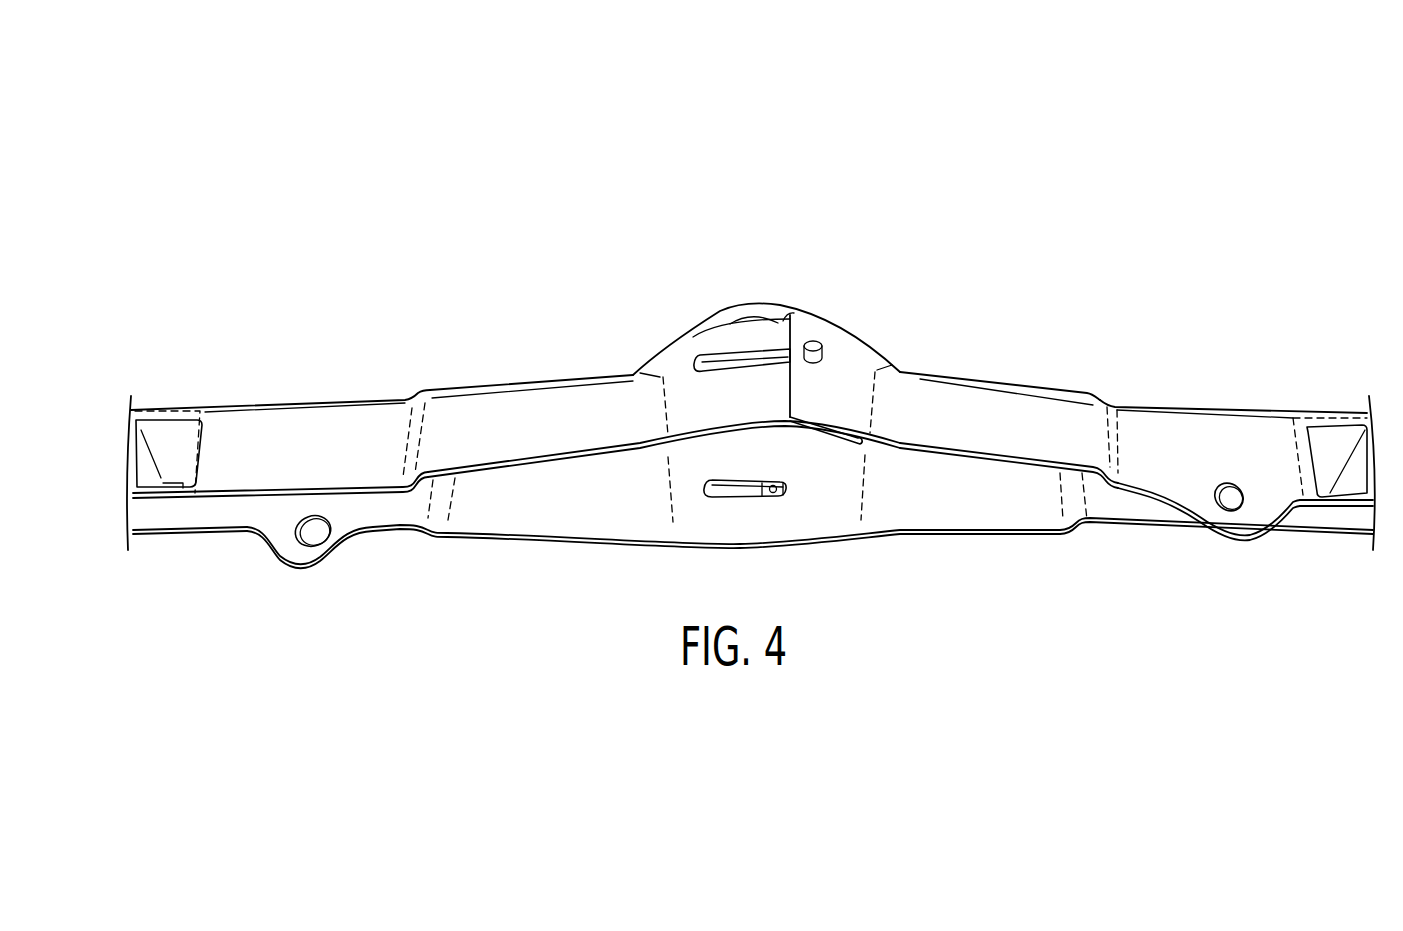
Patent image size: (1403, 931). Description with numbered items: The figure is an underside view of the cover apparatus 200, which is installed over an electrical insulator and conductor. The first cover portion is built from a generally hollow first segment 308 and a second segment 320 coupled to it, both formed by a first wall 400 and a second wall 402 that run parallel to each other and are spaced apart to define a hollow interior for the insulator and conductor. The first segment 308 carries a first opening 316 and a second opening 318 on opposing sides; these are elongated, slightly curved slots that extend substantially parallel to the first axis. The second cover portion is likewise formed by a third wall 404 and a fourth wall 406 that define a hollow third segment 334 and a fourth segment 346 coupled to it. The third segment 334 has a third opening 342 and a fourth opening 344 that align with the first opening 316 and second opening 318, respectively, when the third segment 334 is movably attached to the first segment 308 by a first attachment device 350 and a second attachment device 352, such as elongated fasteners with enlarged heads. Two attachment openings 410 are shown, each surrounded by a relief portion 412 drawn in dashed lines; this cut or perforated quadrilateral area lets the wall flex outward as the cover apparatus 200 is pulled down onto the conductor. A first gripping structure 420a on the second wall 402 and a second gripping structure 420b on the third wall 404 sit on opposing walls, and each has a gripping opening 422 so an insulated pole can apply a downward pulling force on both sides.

The cover apparatus 200 is at (636, 113).
The first segment 308 is at (493, 385).
The first opening 316 is at (701, 352).
The second opening 318 is at (754, 535).
The second segment 320 is at (318, 402).
The third segment 334 is at (992, 382).
The third opening 342 is at (805, 350).
The fourth opening 344 is at (772, 494).
The fourth segment 346 is at (1227, 407).
The first attachment device 350 is at (815, 341).
The second attachment device 352 is at (778, 496).
The first wall 400 is at (283, 430).
The second wall 402 is at (294, 546).
The third wall 404 is at (1280, 428).
The fourth wall 406 is at (1216, 534).
The attachment opening 410 is at (178, 428).
The relief portion 412 is at (198, 412).
The first gripping structure 420a is at (280, 560).
The second gripping structure 420b is at (1232, 537).
The gripping opening 422 is at (312, 547).